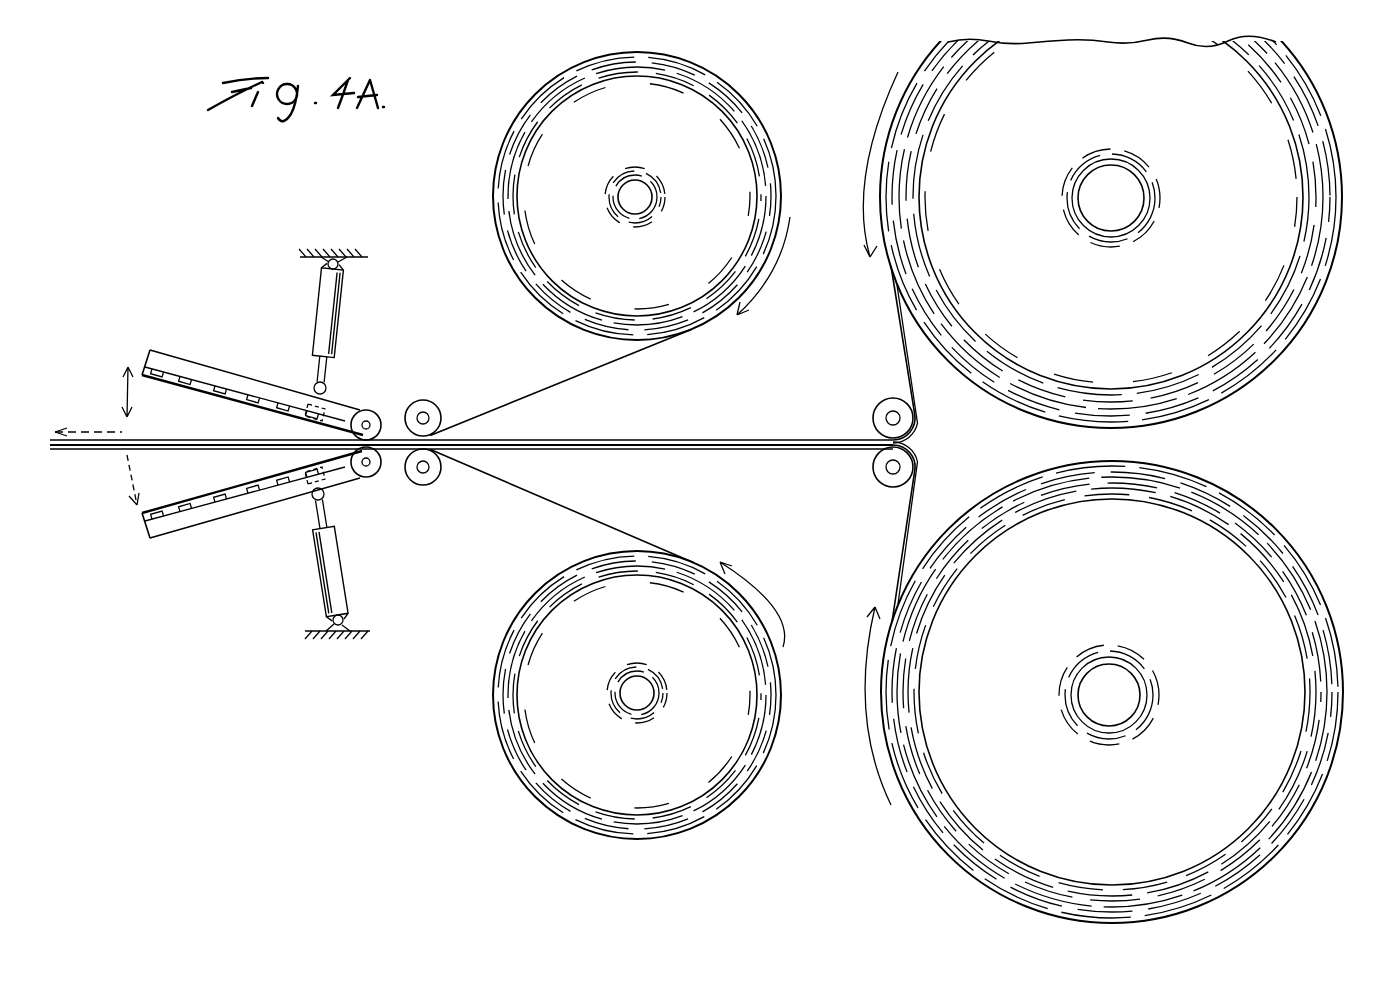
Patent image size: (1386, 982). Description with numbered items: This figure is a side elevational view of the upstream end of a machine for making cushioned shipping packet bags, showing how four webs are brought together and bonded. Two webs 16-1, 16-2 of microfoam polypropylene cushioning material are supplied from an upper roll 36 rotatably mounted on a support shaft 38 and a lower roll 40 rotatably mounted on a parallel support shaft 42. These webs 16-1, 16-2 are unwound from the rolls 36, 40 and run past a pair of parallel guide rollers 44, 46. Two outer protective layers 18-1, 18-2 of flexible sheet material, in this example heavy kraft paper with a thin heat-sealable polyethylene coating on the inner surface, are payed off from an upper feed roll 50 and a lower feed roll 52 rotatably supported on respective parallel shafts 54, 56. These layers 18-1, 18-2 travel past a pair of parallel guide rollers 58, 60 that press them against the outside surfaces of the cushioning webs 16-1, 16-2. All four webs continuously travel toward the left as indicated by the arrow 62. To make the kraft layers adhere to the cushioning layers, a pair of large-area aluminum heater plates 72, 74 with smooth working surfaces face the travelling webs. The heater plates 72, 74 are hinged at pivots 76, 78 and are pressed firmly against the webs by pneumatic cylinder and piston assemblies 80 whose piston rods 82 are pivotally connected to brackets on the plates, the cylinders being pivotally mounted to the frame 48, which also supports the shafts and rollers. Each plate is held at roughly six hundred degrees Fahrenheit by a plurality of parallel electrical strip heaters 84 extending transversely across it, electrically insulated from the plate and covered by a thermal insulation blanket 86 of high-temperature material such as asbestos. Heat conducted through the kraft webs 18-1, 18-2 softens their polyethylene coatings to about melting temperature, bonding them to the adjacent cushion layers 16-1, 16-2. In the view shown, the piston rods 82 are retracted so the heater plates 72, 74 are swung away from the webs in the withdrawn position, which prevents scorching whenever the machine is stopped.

The upper roll 36 is at (1317, 114).
The support shaft 38 is at (1130, 184).
The lower roll 40 is at (1322, 638).
The support shaft 42 is at (1140, 684).
The guide roller 44 is at (890, 398).
The guide roller 46 is at (884, 480).
The upper feed roll 50 is at (722, 90).
The lower feed roll 52 is at (740, 792).
The shaft 54 is at (645, 182).
The shaft 56 is at (638, 680).
The guide roller 58 is at (428, 400).
The guide roller 60 is at (428, 487).
The web of microfoam polypropylene material 16-1 is at (762, 438).
The web of microfoam polypropylene material 16-2 is at (772, 452).
The outer protective layer 18-1 is at (522, 392).
The outer protective layer 18-2 is at (510, 495).
The arrow 62 is at (104, 428).
The heater plate 72 is at (170, 374).
The heater plate 74 is at (198, 520).
The pivot 76 is at (372, 410).
The pivot 78 is at (366, 477).
The pneumatic cylinder and piston assembly 80 is at (346, 312).
The piston rod 82 is at (322, 508).
The electrical strip heater 84 is at (252, 398).
The thermal insulation blanket 86 is at (272, 384).
The frame 48 is at (330, 248).